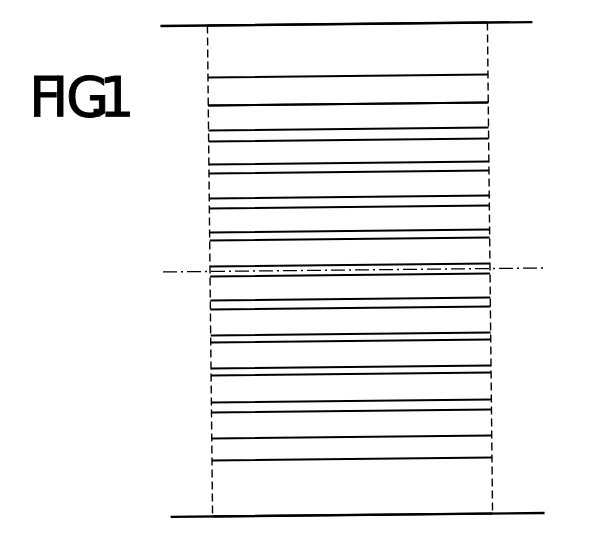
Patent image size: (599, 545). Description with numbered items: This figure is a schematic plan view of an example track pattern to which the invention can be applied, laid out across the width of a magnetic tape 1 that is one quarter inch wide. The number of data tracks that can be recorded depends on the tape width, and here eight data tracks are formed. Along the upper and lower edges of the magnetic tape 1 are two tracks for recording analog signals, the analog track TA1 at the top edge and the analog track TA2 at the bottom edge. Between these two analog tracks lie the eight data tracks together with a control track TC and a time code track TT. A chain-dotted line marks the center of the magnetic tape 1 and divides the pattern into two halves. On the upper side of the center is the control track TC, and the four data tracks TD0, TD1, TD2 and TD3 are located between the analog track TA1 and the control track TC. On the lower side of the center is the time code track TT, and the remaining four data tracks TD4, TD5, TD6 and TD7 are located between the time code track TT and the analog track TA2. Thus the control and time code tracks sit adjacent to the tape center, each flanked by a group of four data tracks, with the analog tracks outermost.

The magnetic tape 1 is at (348, 269).
The analog track TA1 is at (347, 50).
The data track TD0 is at (348, 117).
The data track TD1 is at (349, 152).
The data track TD2 is at (349, 185).
The data track TD3 is at (349, 219).
The control track TC is at (350, 252).
The time code track TT is at (350, 287).
The data track TD4 is at (350, 321).
The data track TD5 is at (351, 354).
The data track TD6 is at (351, 388).
The data track TD7 is at (351, 424).
The analog track TA2 is at (352, 487).